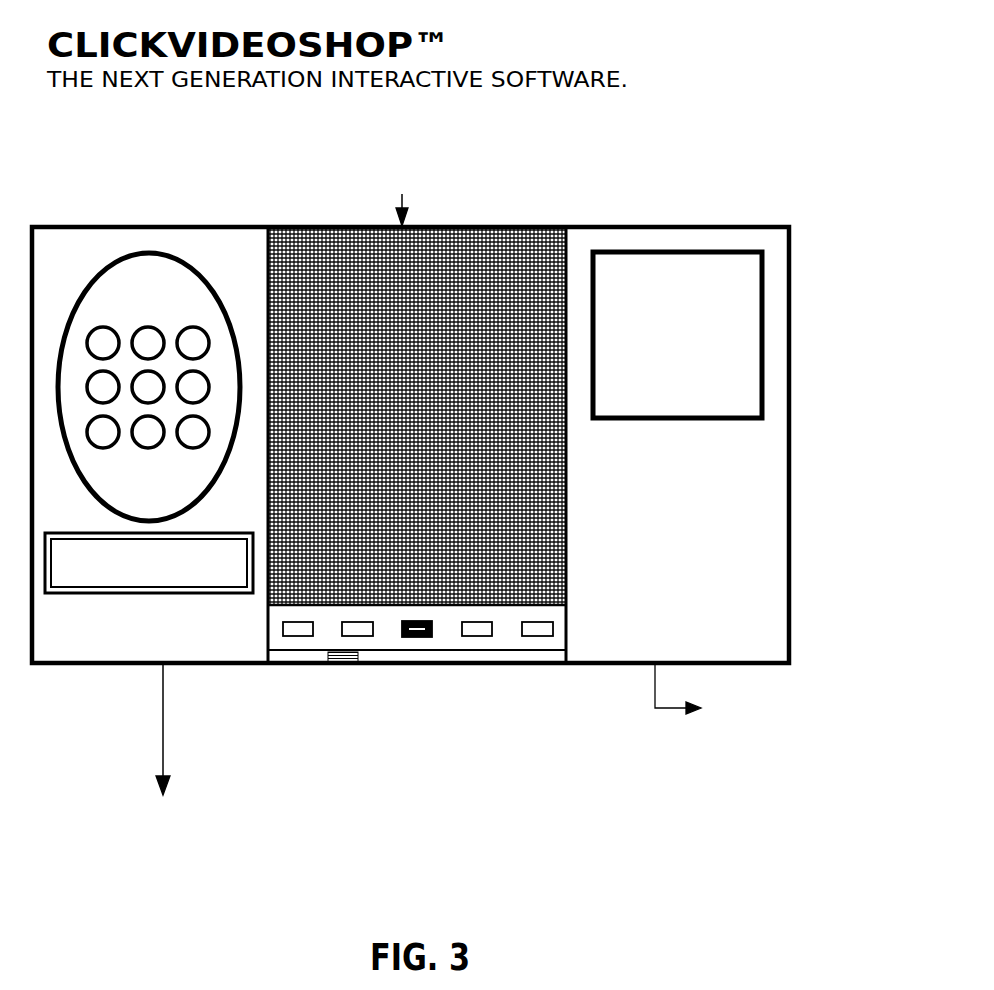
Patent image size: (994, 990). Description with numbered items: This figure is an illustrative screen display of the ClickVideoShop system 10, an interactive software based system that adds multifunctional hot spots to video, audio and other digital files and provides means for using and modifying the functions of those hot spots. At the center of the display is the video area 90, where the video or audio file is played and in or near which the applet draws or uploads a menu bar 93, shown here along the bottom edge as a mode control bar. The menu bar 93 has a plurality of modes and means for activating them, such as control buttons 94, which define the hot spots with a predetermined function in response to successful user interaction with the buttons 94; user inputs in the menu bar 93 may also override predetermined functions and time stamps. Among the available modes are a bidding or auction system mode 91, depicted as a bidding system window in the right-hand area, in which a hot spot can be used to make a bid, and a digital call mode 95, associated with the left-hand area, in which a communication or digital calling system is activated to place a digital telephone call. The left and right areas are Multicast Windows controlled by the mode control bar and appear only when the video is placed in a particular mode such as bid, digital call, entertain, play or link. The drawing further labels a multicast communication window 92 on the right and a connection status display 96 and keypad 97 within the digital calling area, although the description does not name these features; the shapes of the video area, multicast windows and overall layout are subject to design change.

The interactive software based system 10 is at (705, 68).
The video area 90 is at (400, 418).
The bidding or auction system mode 91 is at (670, 268).
The multicast communication window (area 2) 92 is at (743, 503).
The menu bar 93 is at (448, 636).
The control buttons 94 is at (537, 636).
The digital call mode 95 is at (119, 635).
The connection status display 96 is at (60, 578).
The digital calling keypad 97 is at (148, 270).